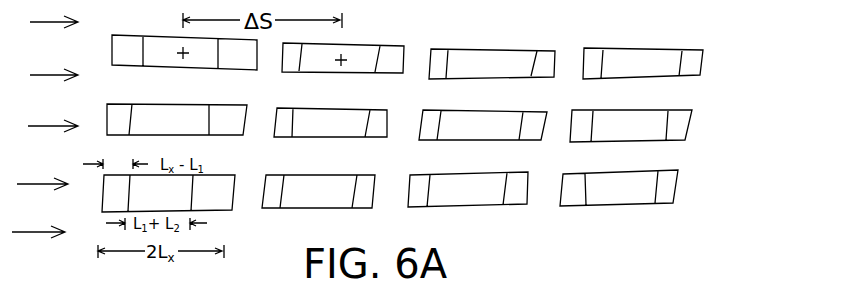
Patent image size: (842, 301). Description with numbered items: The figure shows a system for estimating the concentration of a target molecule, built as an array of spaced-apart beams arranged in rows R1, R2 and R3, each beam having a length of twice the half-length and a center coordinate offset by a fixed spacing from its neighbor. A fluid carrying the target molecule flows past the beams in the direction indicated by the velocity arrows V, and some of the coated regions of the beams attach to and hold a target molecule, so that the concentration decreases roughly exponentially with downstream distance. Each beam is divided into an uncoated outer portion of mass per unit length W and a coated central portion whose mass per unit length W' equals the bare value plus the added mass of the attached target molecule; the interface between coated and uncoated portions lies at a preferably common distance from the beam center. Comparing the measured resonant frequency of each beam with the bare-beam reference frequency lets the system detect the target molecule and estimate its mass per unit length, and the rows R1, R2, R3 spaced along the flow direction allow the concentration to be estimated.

The first row of radiation beam segments R1 is at (427, 57).
The second row of radiation beam segments R2 is at (418, 123).
The third row of radiation beam segments R3 is at (409, 191).
The scan velocity direction V is at (52, 119).
The width of outer segment W is at (164, 195).
The width of central segment W' is at (162, 195).